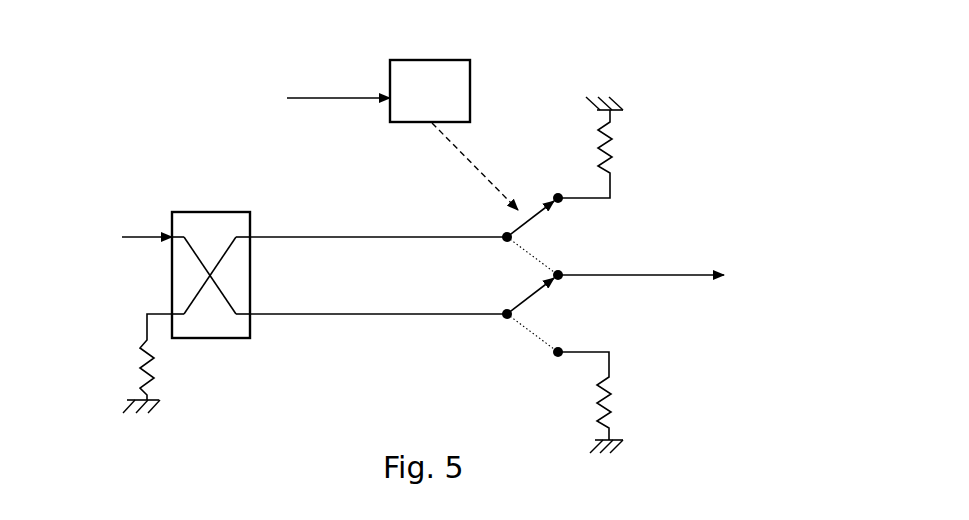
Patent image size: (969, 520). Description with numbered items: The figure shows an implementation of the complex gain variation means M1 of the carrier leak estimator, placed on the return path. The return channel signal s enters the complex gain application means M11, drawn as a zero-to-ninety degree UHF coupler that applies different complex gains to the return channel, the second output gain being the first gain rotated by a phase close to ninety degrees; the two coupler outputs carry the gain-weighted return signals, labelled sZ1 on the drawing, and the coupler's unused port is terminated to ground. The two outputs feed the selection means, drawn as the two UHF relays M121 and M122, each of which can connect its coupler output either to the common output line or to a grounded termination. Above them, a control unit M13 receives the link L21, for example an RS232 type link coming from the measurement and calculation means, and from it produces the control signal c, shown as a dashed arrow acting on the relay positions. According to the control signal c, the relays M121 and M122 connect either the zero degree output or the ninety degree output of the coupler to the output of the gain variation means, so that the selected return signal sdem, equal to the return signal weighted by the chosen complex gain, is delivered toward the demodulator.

The complex gain variation means M1 is at (430, 34).
The complex gain application means M11 is at (186, 299).
The relay control unit M13 is at (378, 91).
The first selection relay M121 is at (562, 186).
The second selection relay M122 is at (562, 365).
The return channel signal s is at (120, 222).
The return signal with gain Z1 sZ1 is at (378, 273).
The return signal to the demodulator sdem is at (684, 243).
The control signal c is at (474, 166).
The link L2 to 1 L21 is at (322, 72).